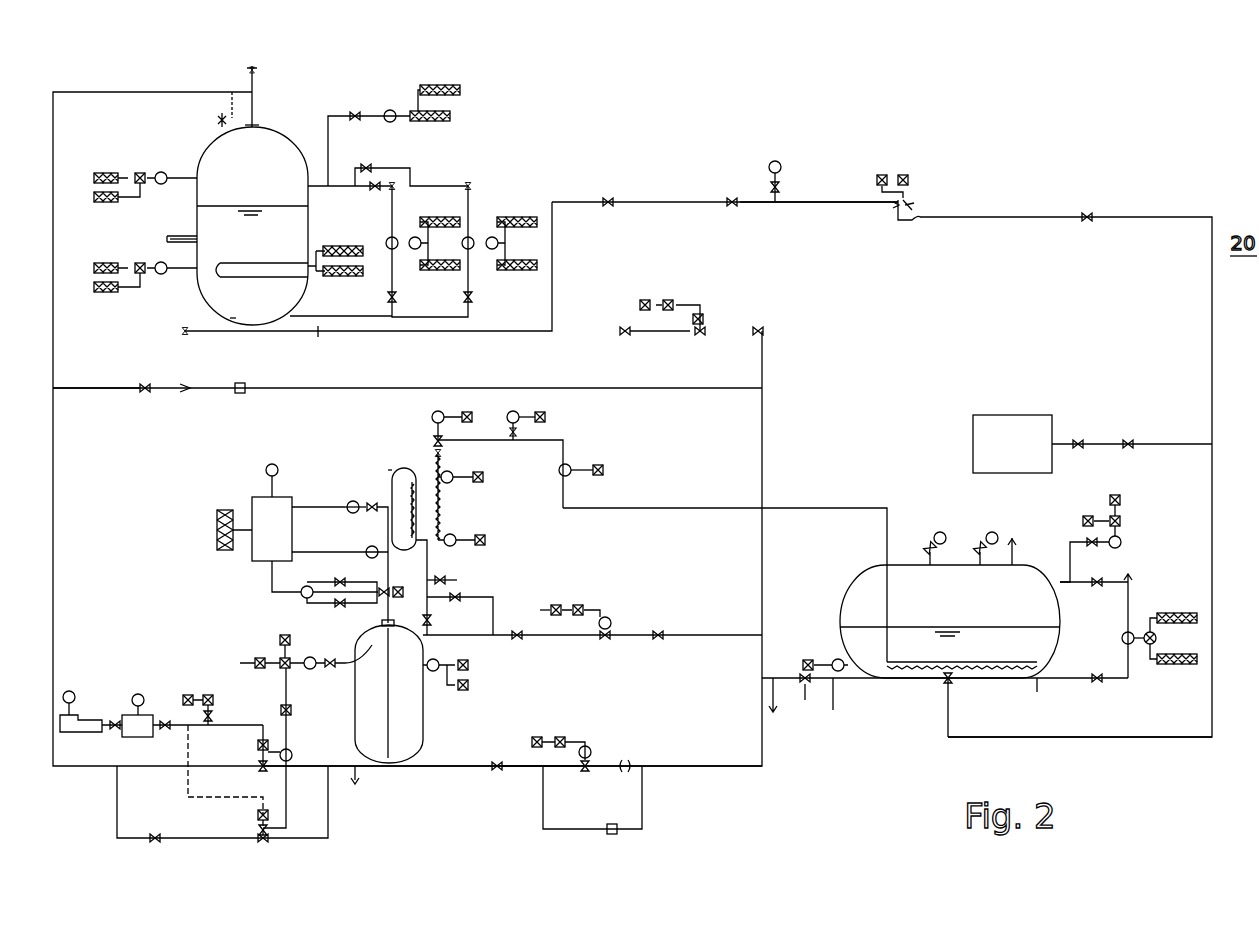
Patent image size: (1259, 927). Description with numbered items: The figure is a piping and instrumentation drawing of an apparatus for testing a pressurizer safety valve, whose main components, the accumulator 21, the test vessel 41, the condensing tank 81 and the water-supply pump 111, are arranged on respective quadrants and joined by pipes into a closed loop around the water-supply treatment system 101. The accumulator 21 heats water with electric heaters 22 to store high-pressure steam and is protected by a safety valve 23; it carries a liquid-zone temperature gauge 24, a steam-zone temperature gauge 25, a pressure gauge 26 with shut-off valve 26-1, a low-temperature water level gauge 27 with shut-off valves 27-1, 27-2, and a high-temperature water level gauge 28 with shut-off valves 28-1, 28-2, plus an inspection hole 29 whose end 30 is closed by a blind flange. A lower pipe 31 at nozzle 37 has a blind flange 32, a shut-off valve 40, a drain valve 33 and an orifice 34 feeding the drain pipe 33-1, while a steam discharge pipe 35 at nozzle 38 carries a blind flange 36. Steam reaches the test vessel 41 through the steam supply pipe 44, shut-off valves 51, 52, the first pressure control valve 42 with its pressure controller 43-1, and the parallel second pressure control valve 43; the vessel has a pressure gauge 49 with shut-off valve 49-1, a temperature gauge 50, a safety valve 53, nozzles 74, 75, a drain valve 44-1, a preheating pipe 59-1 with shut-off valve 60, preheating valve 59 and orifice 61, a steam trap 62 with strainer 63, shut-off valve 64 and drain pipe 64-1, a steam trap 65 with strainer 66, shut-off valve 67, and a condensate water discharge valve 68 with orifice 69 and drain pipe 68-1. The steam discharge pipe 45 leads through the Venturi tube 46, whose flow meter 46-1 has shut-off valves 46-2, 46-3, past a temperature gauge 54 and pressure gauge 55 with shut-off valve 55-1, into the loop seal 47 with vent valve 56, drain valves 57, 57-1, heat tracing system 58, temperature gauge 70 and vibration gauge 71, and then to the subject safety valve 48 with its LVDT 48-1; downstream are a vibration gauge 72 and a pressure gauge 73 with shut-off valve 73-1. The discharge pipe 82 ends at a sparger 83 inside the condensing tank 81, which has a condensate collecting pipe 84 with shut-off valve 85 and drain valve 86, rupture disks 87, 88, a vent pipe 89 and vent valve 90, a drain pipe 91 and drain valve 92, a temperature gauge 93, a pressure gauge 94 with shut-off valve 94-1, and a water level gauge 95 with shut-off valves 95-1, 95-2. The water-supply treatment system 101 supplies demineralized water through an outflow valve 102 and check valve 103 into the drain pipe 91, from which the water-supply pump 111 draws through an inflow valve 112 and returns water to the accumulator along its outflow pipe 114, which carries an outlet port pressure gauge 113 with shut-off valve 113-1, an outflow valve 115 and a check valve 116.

The accumulator 21 is at (295, 140).
The electric heaters 22 is at (300, 272).
The safety valve 23 is at (215, 120).
The temperature gauge for liquid zone 24 is at (118, 295).
The temperature gauge for steam zone 25 is at (115, 172).
The pressure gauge 26 is at (436, 85).
The shut-off valve 26-1 is at (355, 114).
The water level gauge for low temperature 27 is at (450, 216).
The shut-off valve 27-1 is at (378, 186).
The shut-off valve 27-2 is at (386, 297).
The water level gauge for high temperature 28 is at (518, 216).
The shut-off valve 28-1 is at (365, 168).
The shut-off valve 28-2 is at (474, 297).
The inspection hole 29 is at (178, 235).
The end of inspection hole 30 is at (165, 240).
The lower pipe 31 is at (252, 333).
The blind flange 32 is at (182, 331).
The drain valve 33 is at (702, 325).
The drain pipe 33-1 is at (660, 333).
The orifice 34 is at (760, 330).
The steam discharge or pressurization pipe 35 is at (130, 92).
The blind flange 36 is at (256, 68).
The nozzle 37 is at (230, 318).
The nozzle 38 is at (256, 125).
The shut-off valve 40 is at (624, 330).
The test vessel 41 is at (428, 732).
The first pressure control valve 42 is at (258, 760).
The second pressure control valve 43 is at (258, 840).
The pressure controller 43-1 is at (280, 708).
The steam supply pipe 44 is at (310, 765).
The drain valve for test vessel 44-1 is at (356, 778).
The steam discharge pipe 45 is at (395, 468).
The Venturi tube 46 is at (380, 604).
The flow meter 46-1 is at (252, 510).
The shut-off valve 46-2 is at (340, 580).
The shut-off valve 46-3 is at (340, 603).
The loop seal 47 is at (390, 465).
The subject safety valve 48 is at (433, 410).
The linear variable differential transformer 48-1 is at (439, 436).
The pressure gauge 49 is at (282, 650).
The shut-off valve 49-1 is at (328, 658).
The temperature gauge 50 is at (445, 660).
The shut-off valve 51 is at (165, 735).
The shut-off valve 52 is at (152, 840).
The safety valve 53 is at (425, 615).
The temperature gauge 54 is at (370, 550).
The pressure gauge 55 is at (350, 505).
The shut-off valve 55-1 is at (371, 505).
The vent valve 56 is at (434, 470).
The drain valve 57 is at (448, 580).
The drain valve 57-1 is at (462, 597).
The electrical heat tracing system 58 is at (414, 498).
The preheating valve 59 is at (609, 620).
The preheating pipe 59-1 is at (545, 610).
The shut-off valve 60 is at (517, 632).
The orifice 61 is at (658, 632).
The steam trap 62 is at (238, 393).
The strainer 63 is at (183, 390).
The shut-off valve 64 is at (143, 390).
The drain pipe 64-1 is at (75, 392).
The steam trap 65 is at (617, 834).
The strainer 66 is at (562, 831).
The shut-off valve 67 is at (497, 763).
The condensate water discharge valve 68 is at (590, 750).
The drain pipe 68-1 is at (520, 768).
The orifice 69 is at (626, 762).
The temperature gauge 70 is at (487, 545).
The vibration gauge 71 is at (470, 484).
The vibration gauge 72 is at (575, 465).
The pressure gauge 73 is at (518, 412).
The shut-off valve 73-1 is at (511, 430).
The nozzle 74 is at (388, 758).
The nozzle 75 is at (384, 628).
The condensing tank 81 is at (845, 600).
The discharge pipe 82 is at (640, 507).
The sparger 83 is at (915, 668).
The condensate water collecting pipe 84 is at (833, 700).
The shut-off valve 85 is at (807, 686).
The drain valve 86 is at (775, 712).
The rupture disk 87 is at (928, 545).
The rupture disk 88 is at (975, 545).
The vent pipe 89 is at (1005, 545).
The vent valve 90 is at (1013, 540).
The drain pipe 91 is at (945, 700).
The drain valve 92 is at (948, 740).
The temperature gauge 93 is at (816, 660).
The pressure gauge 94 is at (1122, 518).
The shut-off valve 94-1 is at (1085, 540).
The water level gauge 95 is at (1160, 615).
The upper shut-off valve 95-1 is at (1102, 580).
The lower shut-off valve 95-2 is at (1100, 683).
The water-supply treatment system 101 is at (1005, 415).
The supply-water or outflow valve 102 is at (1078, 442).
The check valve 103 is at (1128, 442).
The water-supply pump 111 is at (900, 214).
The inflow valve 112 is at (1087, 216).
The outlet port pressure gauge 113 is at (781, 165).
The shut-off valve 113-1 is at (772, 185).
The line 114 is at (818, 203).
The outflow valve 115 is at (730, 200).
The check valve 116 is at (608, 200).